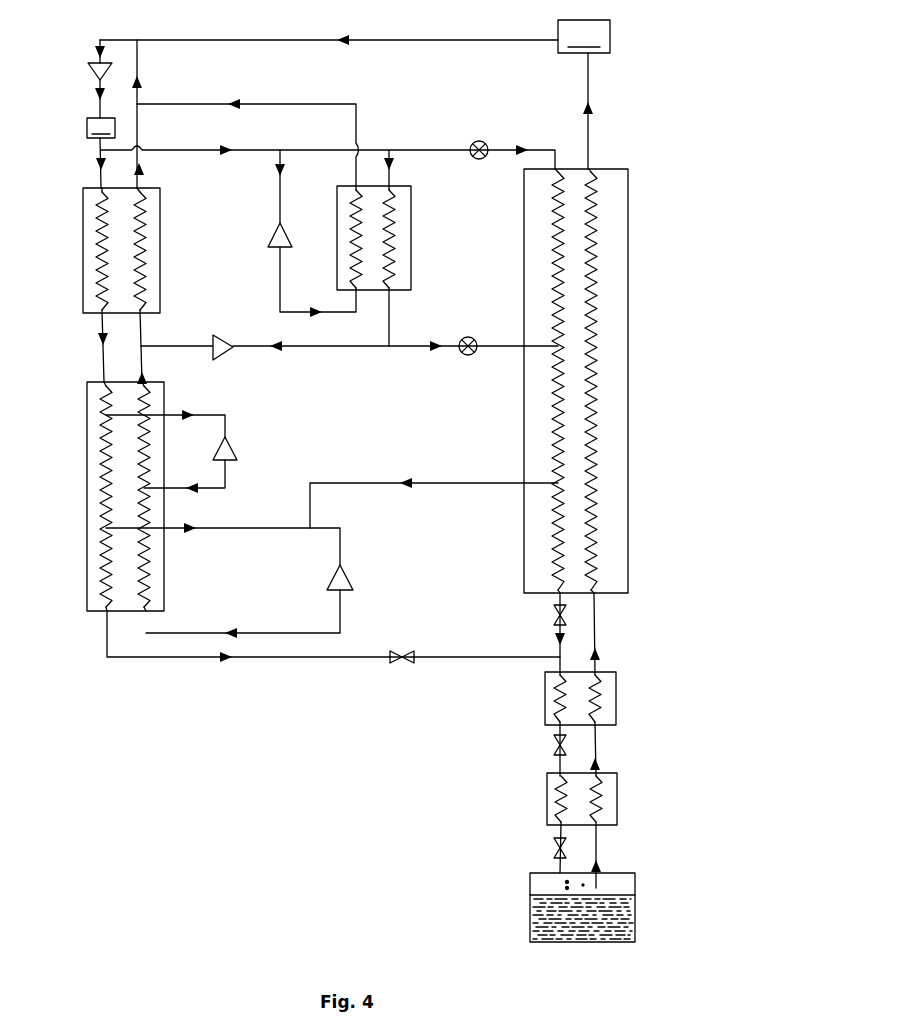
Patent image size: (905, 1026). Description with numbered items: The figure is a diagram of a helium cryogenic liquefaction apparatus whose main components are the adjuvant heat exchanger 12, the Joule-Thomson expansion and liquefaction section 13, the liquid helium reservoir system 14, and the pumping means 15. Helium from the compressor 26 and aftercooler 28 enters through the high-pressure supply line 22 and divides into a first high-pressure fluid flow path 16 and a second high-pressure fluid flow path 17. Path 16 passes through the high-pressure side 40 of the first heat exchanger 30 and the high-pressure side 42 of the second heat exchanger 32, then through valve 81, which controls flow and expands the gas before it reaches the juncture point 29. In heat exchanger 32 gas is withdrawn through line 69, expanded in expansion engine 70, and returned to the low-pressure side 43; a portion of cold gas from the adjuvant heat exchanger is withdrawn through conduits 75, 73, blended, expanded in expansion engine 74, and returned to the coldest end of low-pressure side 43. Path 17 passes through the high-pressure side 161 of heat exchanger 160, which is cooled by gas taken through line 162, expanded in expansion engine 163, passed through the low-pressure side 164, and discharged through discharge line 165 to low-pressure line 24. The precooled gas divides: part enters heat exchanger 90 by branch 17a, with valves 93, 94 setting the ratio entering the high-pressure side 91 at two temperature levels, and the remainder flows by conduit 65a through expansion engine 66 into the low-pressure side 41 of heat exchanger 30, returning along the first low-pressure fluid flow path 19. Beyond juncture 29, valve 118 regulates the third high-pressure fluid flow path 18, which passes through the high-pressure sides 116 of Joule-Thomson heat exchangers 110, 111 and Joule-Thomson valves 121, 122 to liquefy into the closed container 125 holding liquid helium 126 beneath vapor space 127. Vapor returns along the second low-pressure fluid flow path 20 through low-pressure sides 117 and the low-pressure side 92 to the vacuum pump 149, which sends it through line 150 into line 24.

The adjuvant heat exchanger 12 is at (648, 446).
The Joule-Thomson expansion and liquefaction section 13 is at (650, 767).
The liquid helium reservoir system 14 is at (660, 874).
The pumping means 15 is at (624, 46).
The first high-pressure fluid flow path 16 is at (100, 150).
The second high-pressure fluid flow path 17 is at (415, 150).
The branch of second high-pressure fluid flow path 17a is at (414, 345).
The third high-pressure fluid flow path 18 is at (548, 666).
The first low-pressure fluid flow path 19 is at (142, 180).
The second low-pressure fluid flow path 20 is at (590, 76).
The high-pressure supply line 22 is at (100, 107).
The low-pressure line 24 is at (118, 40).
The compressor 26 is at (88, 70).
The aftercooler 28 is at (101, 127).
The juncture point 29 is at (558, 655).
The first heat exchanger 30 is at (95, 266).
The second heat exchanger 32 is at (98, 453).
The high-pressure side of first heat exchanger 40 is at (100, 293).
The low-pressure side of first heat exchanger 41 is at (145, 262).
The high-pressure side of second heat exchanger 42 is at (100, 488).
The low-pressure side of second heat exchanger 43 is at (148, 454).
The conduit 65a is at (316, 348).
The expansion engine 66 is at (230, 355).
The line 69 is at (228, 420).
The expansion engine 70 is at (237, 452).
The conduit 73 is at (243, 528).
The expansion engine 74 is at (345, 580).
The conduit 75 is at (478, 482).
The valve 81 is at (398, 666).
The heat exchanger 90 is at (613, 292).
The high-pressure side of adjuvant heat exchanger 91 is at (552, 253).
The low-pressure side of adjuvant heat exchanger 92 is at (598, 253).
The fluid flow control valve 93 is at (486, 142).
The valve 94 is at (462, 354).
The Joule-Thomson heat exchanger 110 is at (617, 688).
The Joule-Thomson heat exchanger 111 is at (617, 788).
The high-pressure side of Joule-Thomson heat exchanger 116 is at (555, 705).
The low-pressure side of Joule-Thomson heat exchanger 117 is at (598, 706).
The fluid control valve 118 is at (554, 620).
The Joule-Thomson valve 121 is at (554, 745).
The Joule-Thomson valve 122 is at (554, 843).
The closed container 125 is at (630, 928).
The liquid helium layer 126 is at (630, 905).
The vapor space 127 is at (628, 888).
The vacuum pump 149 is at (584, 36).
The line 150 is at (395, 40).
The heat exchanger 160 is at (398, 218).
The high-pressure side of heat exchanger 160 161 is at (392, 185).
The line 162 is at (280, 296).
The expansion engine 163 is at (268, 240).
The low-pressure side of heat exchanger 160 164 is at (350, 207).
The discharge line 165 is at (268, 104).